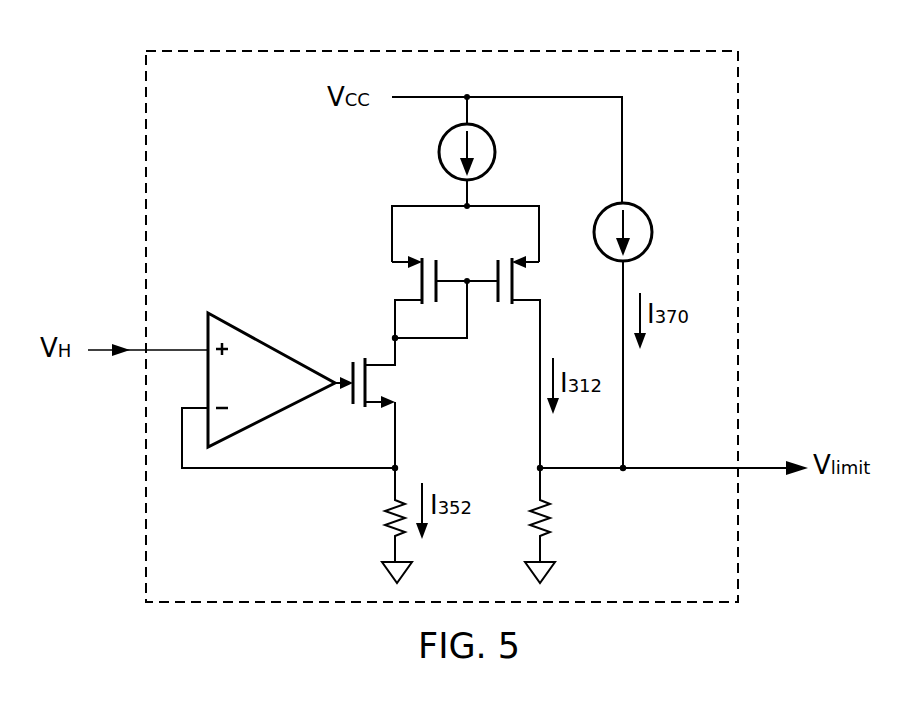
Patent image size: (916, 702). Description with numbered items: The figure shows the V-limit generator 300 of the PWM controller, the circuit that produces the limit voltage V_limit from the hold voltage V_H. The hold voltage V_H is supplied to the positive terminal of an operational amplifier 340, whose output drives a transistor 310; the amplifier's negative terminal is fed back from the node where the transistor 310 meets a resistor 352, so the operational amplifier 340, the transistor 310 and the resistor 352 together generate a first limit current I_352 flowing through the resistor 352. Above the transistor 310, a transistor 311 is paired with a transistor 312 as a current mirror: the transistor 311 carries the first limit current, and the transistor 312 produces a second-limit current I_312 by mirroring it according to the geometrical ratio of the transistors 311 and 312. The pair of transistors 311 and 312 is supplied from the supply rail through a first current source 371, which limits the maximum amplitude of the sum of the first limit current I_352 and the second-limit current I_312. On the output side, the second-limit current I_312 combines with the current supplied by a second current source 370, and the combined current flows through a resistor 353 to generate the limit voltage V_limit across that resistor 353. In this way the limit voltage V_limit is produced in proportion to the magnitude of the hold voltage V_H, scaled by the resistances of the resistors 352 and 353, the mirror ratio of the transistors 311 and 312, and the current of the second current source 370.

The V-limit generator 300 is at (738, 108).
The transistor 310 is at (398, 385).
The transistor 311 is at (395, 283).
The transistor 312 is at (512, 312).
The operational amplifier 340 is at (240, 323).
The resistor 352 is at (385, 518).
The resistor 353 is at (552, 518).
The second current source 370 is at (655, 236).
The first current source 371 is at (432, 152).